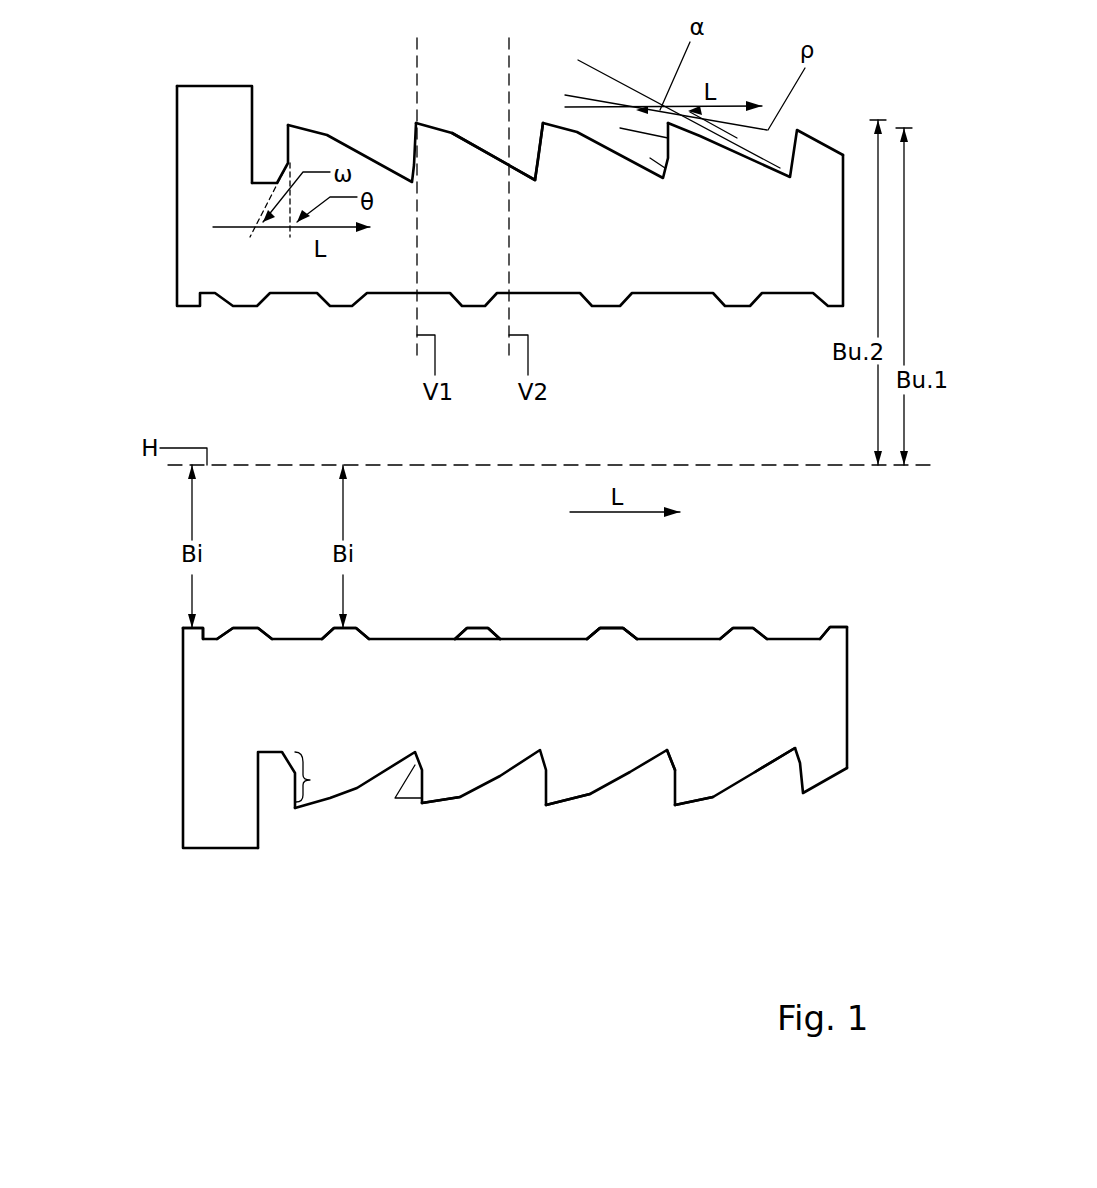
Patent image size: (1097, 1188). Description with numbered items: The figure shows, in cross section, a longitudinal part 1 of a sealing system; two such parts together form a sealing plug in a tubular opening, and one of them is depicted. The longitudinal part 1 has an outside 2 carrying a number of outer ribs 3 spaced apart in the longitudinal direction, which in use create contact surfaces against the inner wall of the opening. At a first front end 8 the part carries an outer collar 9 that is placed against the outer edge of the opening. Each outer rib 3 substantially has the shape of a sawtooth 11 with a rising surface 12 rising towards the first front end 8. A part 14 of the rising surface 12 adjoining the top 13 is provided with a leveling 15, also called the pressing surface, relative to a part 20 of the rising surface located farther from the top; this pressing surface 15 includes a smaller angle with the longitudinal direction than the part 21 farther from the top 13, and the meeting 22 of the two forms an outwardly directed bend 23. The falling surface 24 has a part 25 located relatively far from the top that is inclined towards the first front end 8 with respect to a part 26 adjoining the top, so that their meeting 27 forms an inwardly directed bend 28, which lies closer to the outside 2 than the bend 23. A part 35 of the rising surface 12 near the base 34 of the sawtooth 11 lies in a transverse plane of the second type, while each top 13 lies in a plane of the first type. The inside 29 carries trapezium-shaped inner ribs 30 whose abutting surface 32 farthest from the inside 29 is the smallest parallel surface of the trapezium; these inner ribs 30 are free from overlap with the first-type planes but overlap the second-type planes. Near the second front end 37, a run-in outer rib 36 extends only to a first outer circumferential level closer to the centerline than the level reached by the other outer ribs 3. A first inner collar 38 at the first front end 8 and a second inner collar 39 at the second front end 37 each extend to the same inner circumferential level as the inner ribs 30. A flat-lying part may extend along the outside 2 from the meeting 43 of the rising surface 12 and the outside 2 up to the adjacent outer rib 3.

The longitudinal part 1 is at (137, 482).
The outside 2 is at (267, 183).
The outer ribs 3 is at (571, 834).
The first front end 8 is at (177, 197).
The outer collar 9 is at (213, 86).
The sawtooth 11 is at (353, 760).
The rising surface 12 is at (506, 831).
The top 13 is at (542, 123).
The part of the rising surface adjoining the top 14 is at (352, 96).
The leveling / pressing surface 15 is at (352, 96).
The part of the rising surface located farther from the top 20 is at (350, 147).
The part of the rising surface located farther from the top 21 is at (477, 145).
The meeting 22 is at (479, 95).
The outwardly directed bend 23 is at (479, 95).
The falling surface 24 is at (358, 817).
The part of the falling surface located relatively far from the top 25 is at (650, 158).
The part of the falling surface adjoining the top 26 is at (620, 128).
The meeting 27 is at (671, 831).
The inwardly directed bend 28 is at (671, 831).
The inside 29 is at (297, 639).
The inner ribs 30 is at (477, 638).
The abutting surface 32 is at (612, 628).
The base 34 is at (544, 187).
The part of the rising surface located near the base 35 is at (493, 192).
The run-in outer rib 36 is at (820, 140).
The second front end 37 is at (847, 687).
The first inner collar 38 is at (193, 637).
The second inner collar 39 is at (837, 630).
The meeting of the rising surface and the outside 43 is at (668, 753).